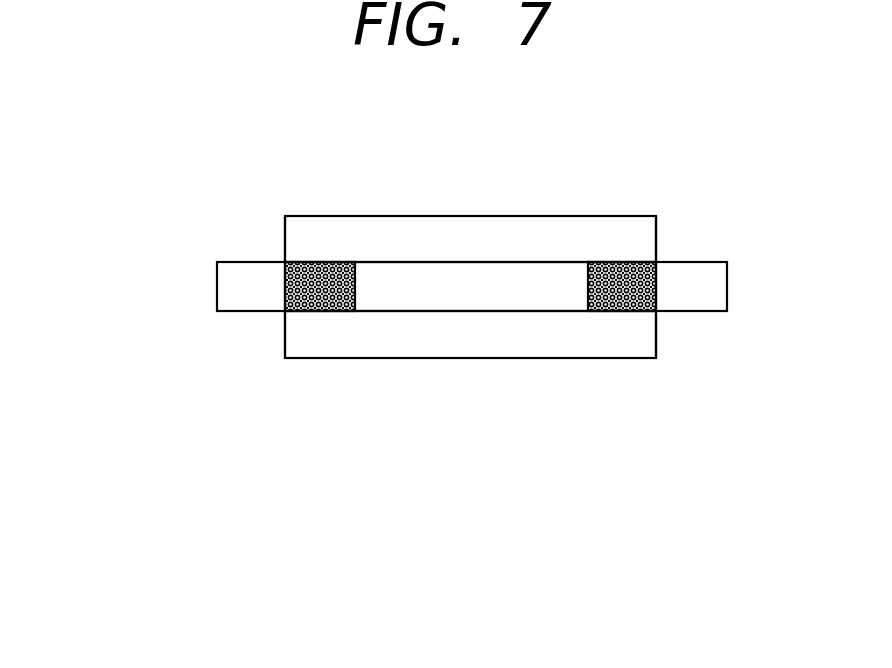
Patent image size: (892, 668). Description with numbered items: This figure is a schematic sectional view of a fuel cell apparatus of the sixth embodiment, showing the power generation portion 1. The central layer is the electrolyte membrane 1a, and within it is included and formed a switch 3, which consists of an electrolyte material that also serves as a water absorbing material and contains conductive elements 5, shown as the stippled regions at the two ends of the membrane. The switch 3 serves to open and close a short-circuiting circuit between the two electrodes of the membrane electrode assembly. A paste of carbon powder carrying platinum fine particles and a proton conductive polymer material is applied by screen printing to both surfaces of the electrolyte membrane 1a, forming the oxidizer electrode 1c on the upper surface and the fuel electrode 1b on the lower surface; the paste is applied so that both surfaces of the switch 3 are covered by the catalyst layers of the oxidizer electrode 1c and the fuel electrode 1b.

The power generation portion 1 is at (180, 289).
The electrolyte membrane 1a is at (398, 298).
The fuel electrode 1b is at (490, 342).
The oxidizer electrode 1c is at (491, 233).
The switch 3 is at (627, 311).
The conductive elements 5 is at (621, 262).